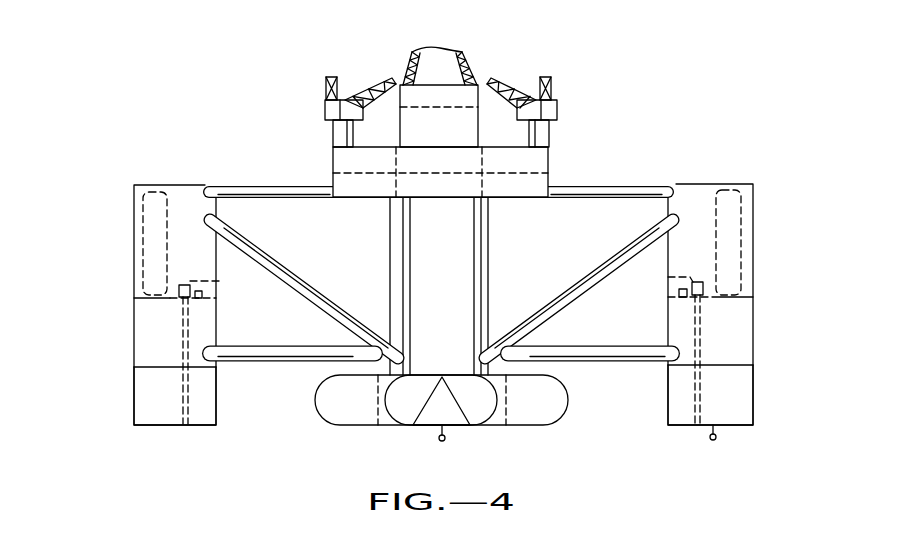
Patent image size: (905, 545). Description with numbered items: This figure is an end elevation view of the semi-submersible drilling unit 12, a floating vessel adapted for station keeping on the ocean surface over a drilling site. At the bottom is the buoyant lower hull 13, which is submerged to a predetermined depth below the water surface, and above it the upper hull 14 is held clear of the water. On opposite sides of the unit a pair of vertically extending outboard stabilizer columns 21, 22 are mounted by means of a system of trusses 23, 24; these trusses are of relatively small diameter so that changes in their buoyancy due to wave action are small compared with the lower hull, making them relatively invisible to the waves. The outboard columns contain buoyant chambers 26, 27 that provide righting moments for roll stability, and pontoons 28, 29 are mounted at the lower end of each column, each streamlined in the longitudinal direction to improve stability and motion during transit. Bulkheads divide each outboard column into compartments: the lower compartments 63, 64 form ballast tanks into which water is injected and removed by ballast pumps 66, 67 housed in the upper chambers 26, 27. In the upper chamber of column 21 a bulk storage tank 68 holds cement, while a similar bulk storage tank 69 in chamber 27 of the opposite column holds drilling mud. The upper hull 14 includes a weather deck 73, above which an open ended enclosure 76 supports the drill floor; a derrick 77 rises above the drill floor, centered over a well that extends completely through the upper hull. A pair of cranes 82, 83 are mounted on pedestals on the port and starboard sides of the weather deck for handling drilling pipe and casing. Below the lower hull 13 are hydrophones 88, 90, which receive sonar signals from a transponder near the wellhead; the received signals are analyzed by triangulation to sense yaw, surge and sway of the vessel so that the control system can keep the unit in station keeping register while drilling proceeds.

The semi-submersible floating vessel 12 is at (445, 244).
The lower hull 13 is at (569, 400).
The upper hull 14 is at (550, 160).
The outboard stabilizer column 21 is at (134, 254).
The outboard stabilizer column 22 is at (754, 248).
The truss 23 is at (627, 247).
The truss 24 is at (267, 255).
The buoyant chamber 26 is at (202, 271).
The buoyant chamber 27 is at (701, 271).
The pontoon 28 is at (134, 408).
The pontoon 29 is at (754, 406).
The lower compartment 63 is at (164, 345).
The lower compartment 64 is at (737, 346).
The ballast pump 66 is at (230, 283).
The ballast pump 67 is at (668, 277).
The bulk storage tank 68 is at (168, 220).
The bulk storage tank 69 is at (745, 212).
The weather deck 73 is at (361, 146).
The open ended enclosure 76 is at (479, 130).
The derrick 77 is at (468, 55).
The crane 82 is at (324, 108).
The crane 83 is at (560, 105).
The hydrophone 88 is at (445, 441).
The hydrophone 90 is at (716, 440).